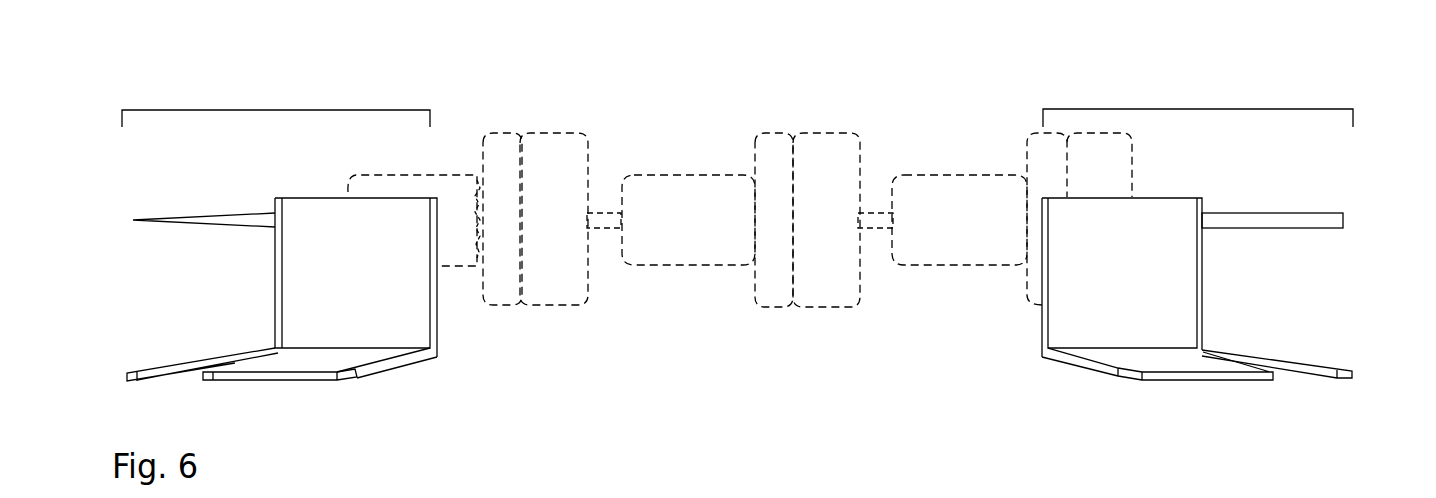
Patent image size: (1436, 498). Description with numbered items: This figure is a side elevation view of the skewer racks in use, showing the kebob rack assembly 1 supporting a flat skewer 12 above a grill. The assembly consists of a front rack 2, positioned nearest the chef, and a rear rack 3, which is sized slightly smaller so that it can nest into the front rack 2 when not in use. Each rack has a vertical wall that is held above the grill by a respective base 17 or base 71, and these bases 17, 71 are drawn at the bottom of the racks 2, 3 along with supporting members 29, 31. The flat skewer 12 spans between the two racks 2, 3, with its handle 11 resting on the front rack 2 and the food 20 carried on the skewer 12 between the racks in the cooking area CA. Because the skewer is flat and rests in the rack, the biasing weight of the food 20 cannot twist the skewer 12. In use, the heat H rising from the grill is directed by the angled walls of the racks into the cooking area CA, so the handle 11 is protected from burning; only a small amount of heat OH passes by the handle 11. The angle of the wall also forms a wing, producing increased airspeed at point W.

The kebob rack assembly 1 is at (292, 40).
The front rack 2 is at (1195, 109).
The rear rack 3 is at (271, 110).
The handle 11 is at (1252, 211).
The flat skewer 12 is at (203, 221).
The base 17 is at (1255, 358).
The food 20 is at (675, 185).
The support arm 29 is at (335, 362).
The base plate 31 is at (1177, 357).
The base 71 is at (203, 360).
The heat H is at (1077, 384).
The point W is at (1094, 380).
The heat OH is at (1310, 400).
The cooking area CA is at (791, 345).